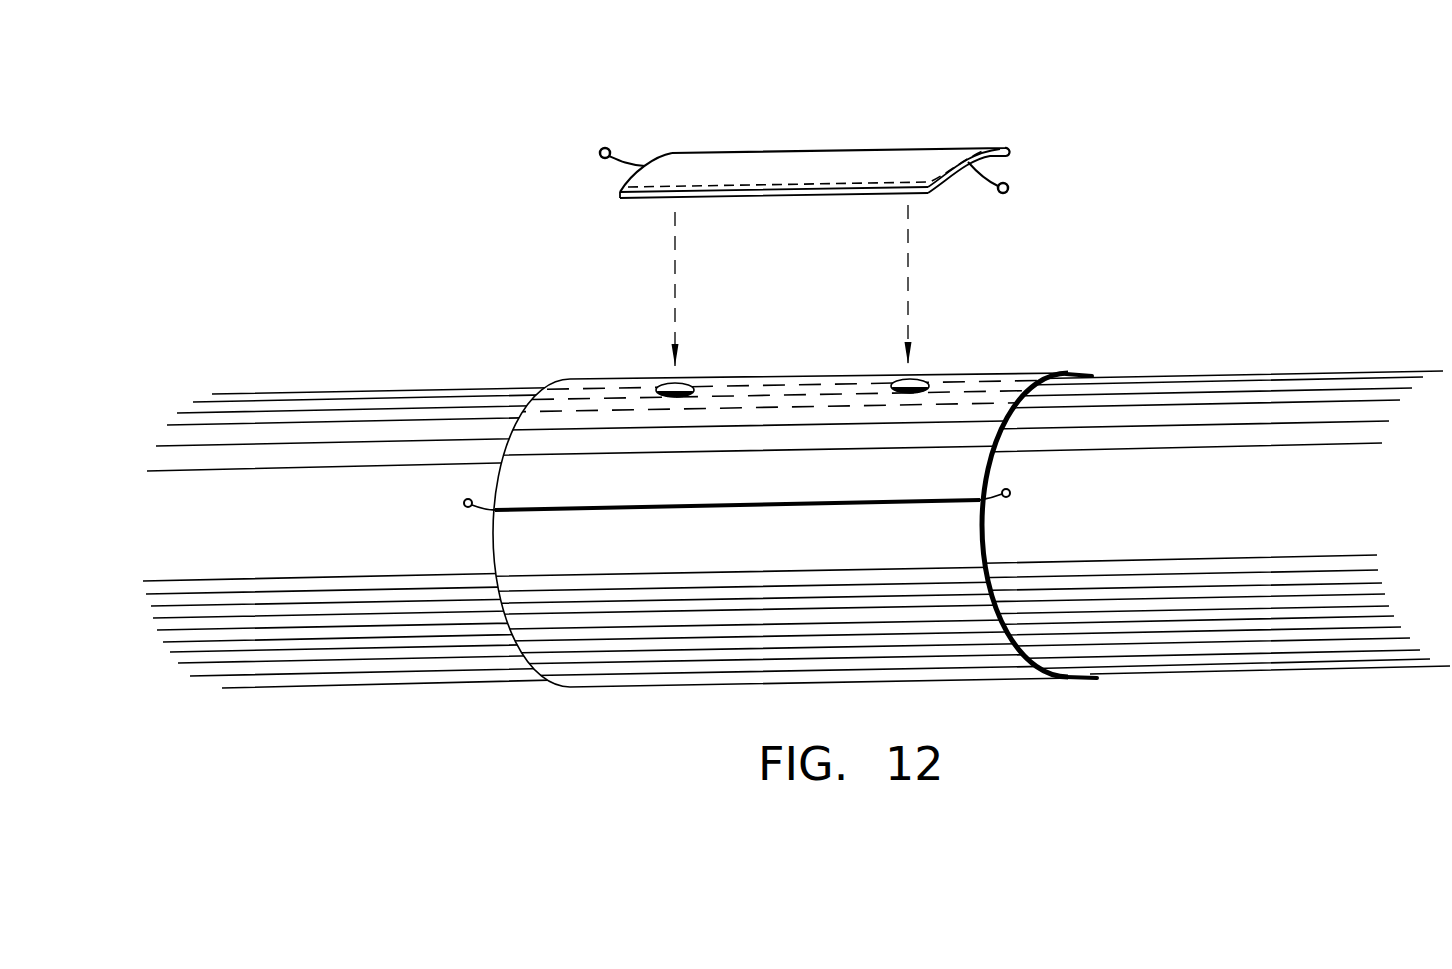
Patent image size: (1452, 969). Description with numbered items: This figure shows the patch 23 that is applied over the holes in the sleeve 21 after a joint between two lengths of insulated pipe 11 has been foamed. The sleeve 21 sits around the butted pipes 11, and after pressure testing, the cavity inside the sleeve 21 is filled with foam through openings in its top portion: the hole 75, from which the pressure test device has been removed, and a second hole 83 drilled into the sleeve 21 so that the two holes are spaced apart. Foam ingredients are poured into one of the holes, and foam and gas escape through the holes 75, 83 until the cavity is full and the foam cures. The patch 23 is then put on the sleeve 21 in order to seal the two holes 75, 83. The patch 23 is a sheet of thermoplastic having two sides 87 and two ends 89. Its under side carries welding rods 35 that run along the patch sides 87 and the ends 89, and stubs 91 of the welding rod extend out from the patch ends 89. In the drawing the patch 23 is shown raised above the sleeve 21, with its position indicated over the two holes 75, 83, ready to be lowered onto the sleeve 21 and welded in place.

The pipe 11 is at (347, 410).
The sleeve 21 is at (740, 404).
The patch 23 is at (723, 158).
The welding rods 35 is at (801, 180).
The hole 75 is at (922, 378).
The second hole 83 is at (668, 375).
The patch sides 87 is at (997, 162).
The patch ends 89 is at (623, 190).
The stubs 91 is at (634, 163).